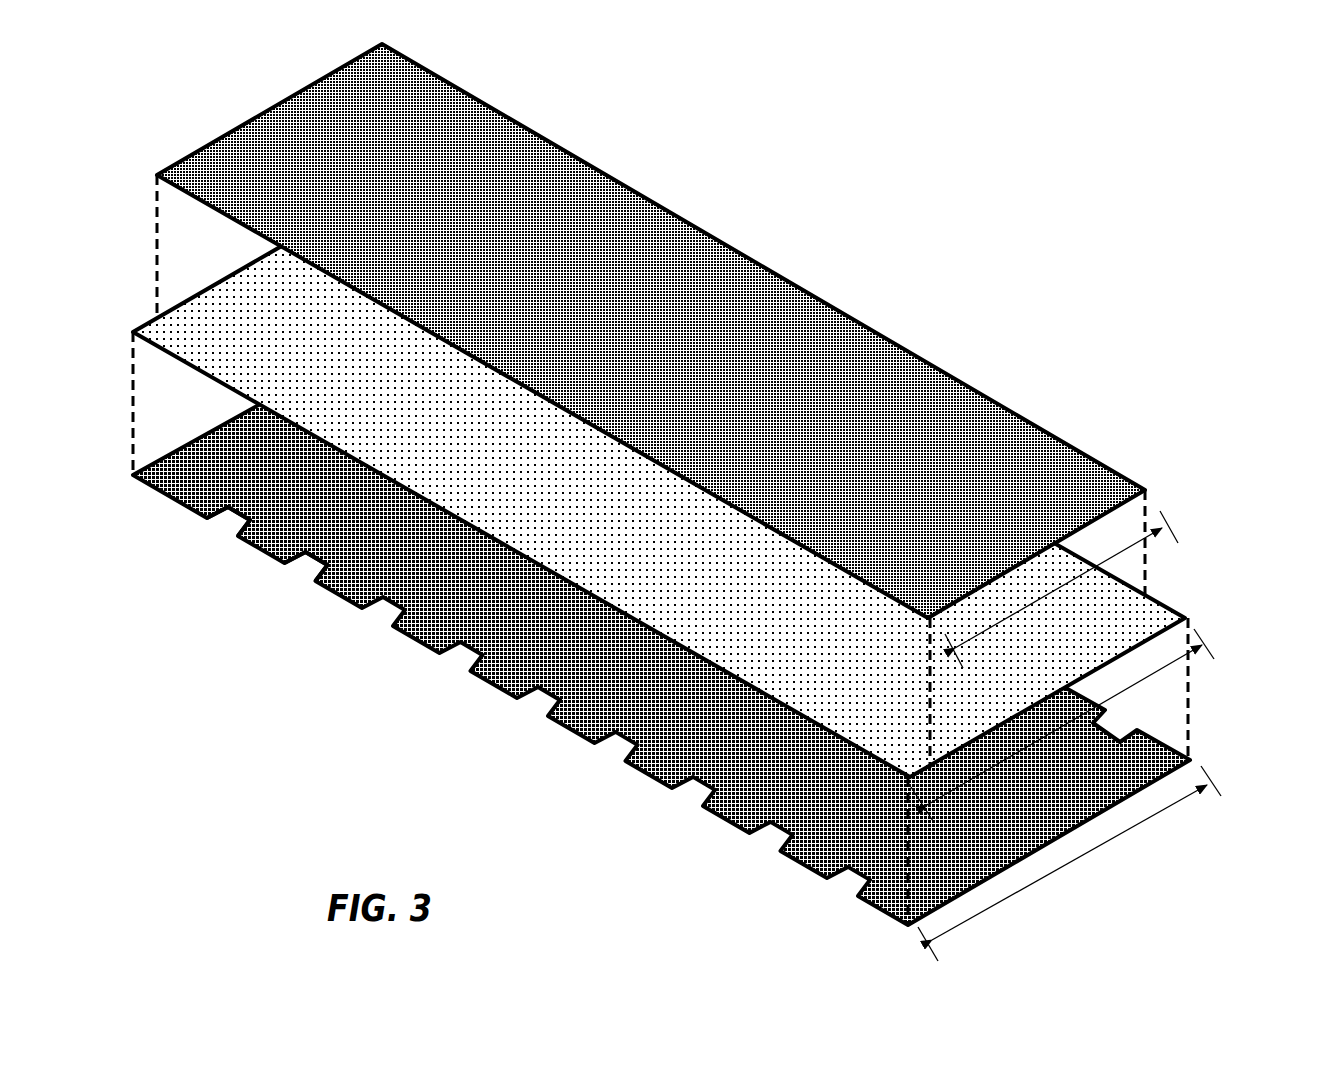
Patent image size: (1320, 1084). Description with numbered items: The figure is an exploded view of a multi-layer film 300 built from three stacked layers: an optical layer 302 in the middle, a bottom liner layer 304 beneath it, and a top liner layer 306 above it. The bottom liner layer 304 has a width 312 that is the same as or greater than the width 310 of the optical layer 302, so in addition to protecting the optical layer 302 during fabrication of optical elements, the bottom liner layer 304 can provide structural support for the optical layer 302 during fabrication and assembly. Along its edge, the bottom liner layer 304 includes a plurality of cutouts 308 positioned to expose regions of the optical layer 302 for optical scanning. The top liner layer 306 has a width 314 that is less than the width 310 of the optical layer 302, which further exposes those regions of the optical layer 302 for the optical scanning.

The multi-layer film 300 is at (701, 502).
The optical layer 302 is at (662, 549).
The bottom liner layer 304 is at (662, 718).
The top liner layer 306 is at (662, 391).
The cutouts 308 is at (307, 573).
The width of the optical layer 310 is at (1182, 665).
The width of the bottom liner layer 312 is at (1113, 843).
The width of the top liner layer 314 is at (1120, 557).